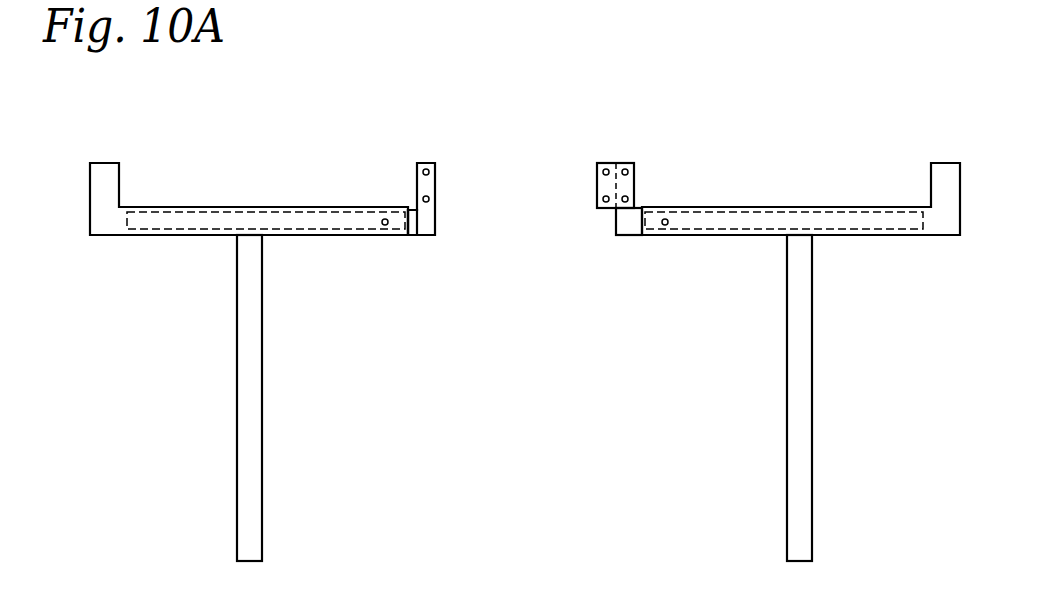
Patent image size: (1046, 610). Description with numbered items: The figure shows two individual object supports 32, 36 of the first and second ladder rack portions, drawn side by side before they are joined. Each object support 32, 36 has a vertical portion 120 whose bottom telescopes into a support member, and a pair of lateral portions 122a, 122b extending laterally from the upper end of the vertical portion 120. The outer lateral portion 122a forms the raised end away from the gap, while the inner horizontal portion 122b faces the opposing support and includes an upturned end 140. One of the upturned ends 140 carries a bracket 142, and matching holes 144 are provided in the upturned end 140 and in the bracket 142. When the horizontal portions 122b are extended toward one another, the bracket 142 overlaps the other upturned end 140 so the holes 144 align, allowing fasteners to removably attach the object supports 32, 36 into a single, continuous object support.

The object support 32 is at (506, 343).
The rear object support 36 is at (506, 343).
The vertical portion 120 is at (256, 418).
The lateral portion 122a is at (103, 225).
The horizontal portion 122b is at (422, 236).
The upturned end 140 is at (417, 183).
The bracket 142 is at (597, 199).
The matching holes 144 is at (426, 168).